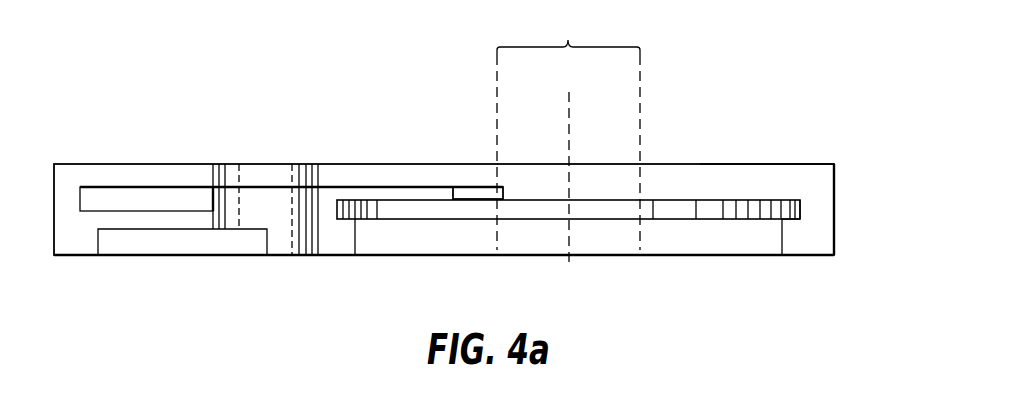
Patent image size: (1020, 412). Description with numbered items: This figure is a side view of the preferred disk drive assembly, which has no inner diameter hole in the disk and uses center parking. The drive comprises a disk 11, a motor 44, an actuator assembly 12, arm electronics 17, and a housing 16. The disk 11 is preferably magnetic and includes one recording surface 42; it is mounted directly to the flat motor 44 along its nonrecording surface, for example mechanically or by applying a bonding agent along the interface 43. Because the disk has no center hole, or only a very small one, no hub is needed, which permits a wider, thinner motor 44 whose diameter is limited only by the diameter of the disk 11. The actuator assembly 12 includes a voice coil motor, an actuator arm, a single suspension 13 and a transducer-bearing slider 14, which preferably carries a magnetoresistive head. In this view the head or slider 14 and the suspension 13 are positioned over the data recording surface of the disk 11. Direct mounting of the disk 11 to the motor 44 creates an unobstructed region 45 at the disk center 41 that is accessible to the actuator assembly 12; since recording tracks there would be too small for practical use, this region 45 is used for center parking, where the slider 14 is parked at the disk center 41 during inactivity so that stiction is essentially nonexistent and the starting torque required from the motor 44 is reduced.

The disk 11 is at (803, 198).
The actuator assembly 12 is at (267, 147).
The suspension 13 is at (381, 186).
The slider 14 is at (480, 192).
The housing 16 is at (783, 163).
The arm electronics 17 is at (185, 250).
The disk center 41 is at (568, 115).
The recording surface 42 is at (680, 200).
The interface 43 is at (790, 222).
The motor 44 is at (778, 245).
The unobstructed region 45 is at (568, 129).